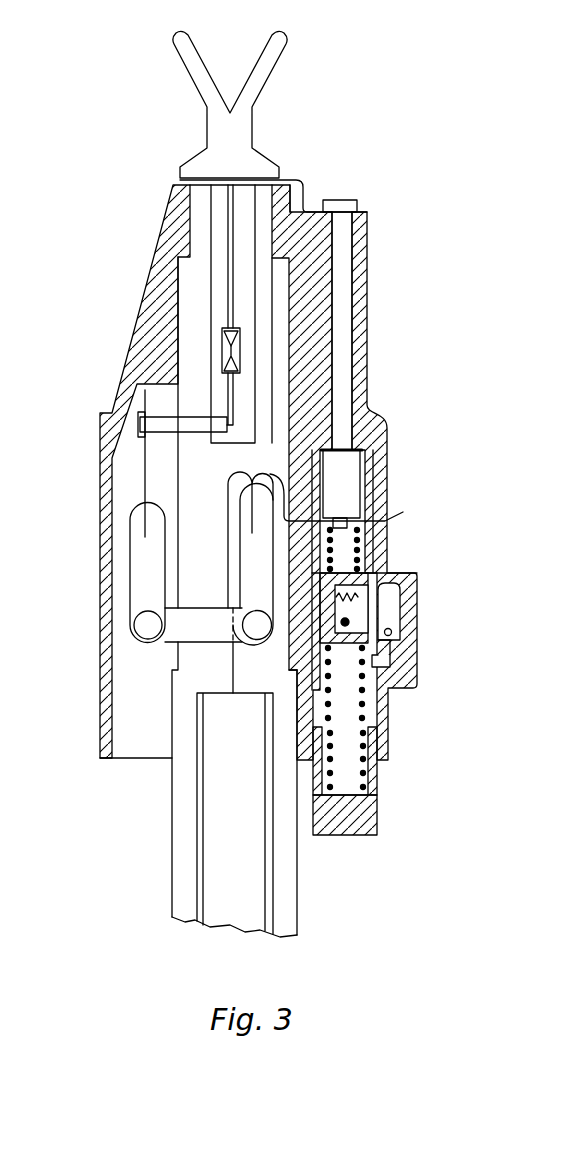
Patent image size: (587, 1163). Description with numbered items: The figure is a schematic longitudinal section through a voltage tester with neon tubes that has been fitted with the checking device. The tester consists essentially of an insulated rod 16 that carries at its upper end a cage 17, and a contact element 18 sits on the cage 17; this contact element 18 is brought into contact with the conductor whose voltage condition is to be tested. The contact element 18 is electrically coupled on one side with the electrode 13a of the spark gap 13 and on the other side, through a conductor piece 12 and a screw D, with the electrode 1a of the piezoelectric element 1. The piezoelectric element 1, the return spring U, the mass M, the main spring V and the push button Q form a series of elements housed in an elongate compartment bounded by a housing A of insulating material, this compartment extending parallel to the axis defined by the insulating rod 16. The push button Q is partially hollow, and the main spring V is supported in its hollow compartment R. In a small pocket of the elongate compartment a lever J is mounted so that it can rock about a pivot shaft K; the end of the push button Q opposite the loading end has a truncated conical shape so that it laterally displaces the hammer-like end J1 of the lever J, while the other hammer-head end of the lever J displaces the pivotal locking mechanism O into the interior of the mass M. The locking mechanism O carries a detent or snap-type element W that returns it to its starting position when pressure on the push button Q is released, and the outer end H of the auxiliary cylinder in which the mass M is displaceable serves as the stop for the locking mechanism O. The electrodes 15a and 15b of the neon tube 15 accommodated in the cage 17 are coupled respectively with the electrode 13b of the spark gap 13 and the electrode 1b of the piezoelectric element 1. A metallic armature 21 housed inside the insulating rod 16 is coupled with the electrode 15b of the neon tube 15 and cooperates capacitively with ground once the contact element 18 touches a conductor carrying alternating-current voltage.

The contact element 18 is at (252, 128).
The conductor piece 12 is at (305, 183).
The cage 17 is at (100, 453).
The housing A is at (368, 425).
The screw D is at (342, 368).
The spark gap 13 is at (222, 350).
The electrode of the spark gap 13a is at (222, 330).
The electrode of the spark gap 13b is at (222, 372).
The neon tube 15 is at (153, 573).
The electrode of the neon tube 15a is at (145, 528).
The electrode of the neon tube 15b is at (276, 476).
The piezoelectric element 1 is at (347, 492).
The electrode of the piezoelectric element 1a is at (373, 453).
The electrode of the piezoelectric element 1b is at (348, 501).
The return spring U is at (378, 538).
The outer end of auxiliary cylinder H is at (387, 562).
The locking mechanism O is at (397, 577).
The lever J is at (387, 613).
The pivot shaft K is at (397, 630).
The mass M is at (392, 640).
The hammer-like shaped end of the lever J1 is at (383, 660).
The main spring V is at (363, 707).
The hollow compartment R is at (352, 780).
The push button Q is at (362, 817).
The detent element W is at (292, 657).
The insulated rod 16 is at (172, 865).
The metallic armature 21 is at (200, 898).